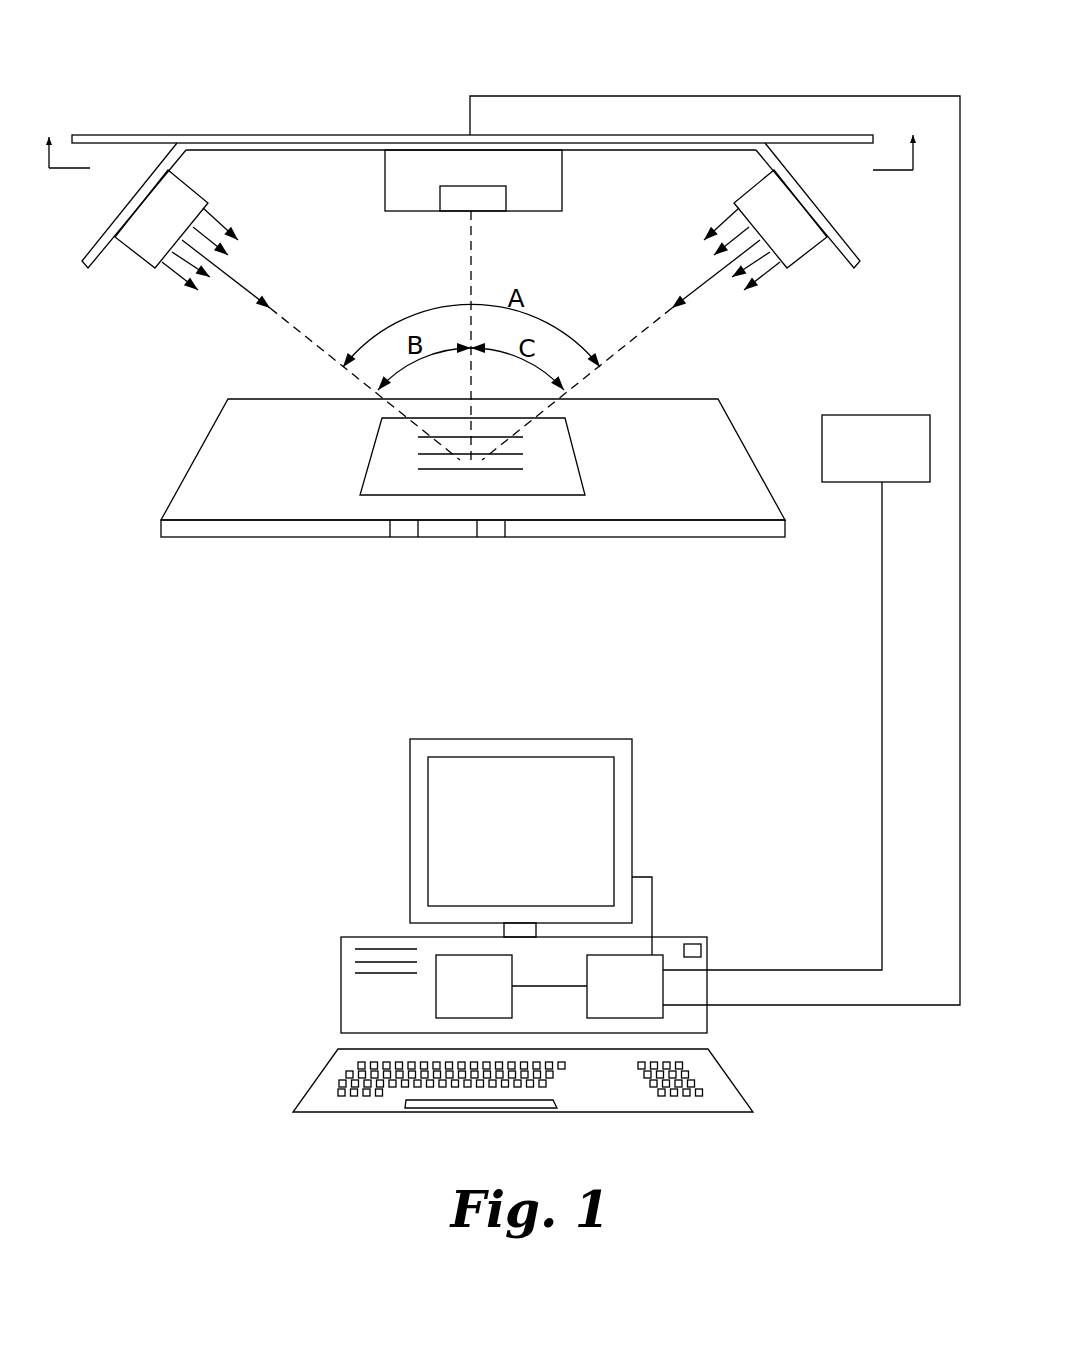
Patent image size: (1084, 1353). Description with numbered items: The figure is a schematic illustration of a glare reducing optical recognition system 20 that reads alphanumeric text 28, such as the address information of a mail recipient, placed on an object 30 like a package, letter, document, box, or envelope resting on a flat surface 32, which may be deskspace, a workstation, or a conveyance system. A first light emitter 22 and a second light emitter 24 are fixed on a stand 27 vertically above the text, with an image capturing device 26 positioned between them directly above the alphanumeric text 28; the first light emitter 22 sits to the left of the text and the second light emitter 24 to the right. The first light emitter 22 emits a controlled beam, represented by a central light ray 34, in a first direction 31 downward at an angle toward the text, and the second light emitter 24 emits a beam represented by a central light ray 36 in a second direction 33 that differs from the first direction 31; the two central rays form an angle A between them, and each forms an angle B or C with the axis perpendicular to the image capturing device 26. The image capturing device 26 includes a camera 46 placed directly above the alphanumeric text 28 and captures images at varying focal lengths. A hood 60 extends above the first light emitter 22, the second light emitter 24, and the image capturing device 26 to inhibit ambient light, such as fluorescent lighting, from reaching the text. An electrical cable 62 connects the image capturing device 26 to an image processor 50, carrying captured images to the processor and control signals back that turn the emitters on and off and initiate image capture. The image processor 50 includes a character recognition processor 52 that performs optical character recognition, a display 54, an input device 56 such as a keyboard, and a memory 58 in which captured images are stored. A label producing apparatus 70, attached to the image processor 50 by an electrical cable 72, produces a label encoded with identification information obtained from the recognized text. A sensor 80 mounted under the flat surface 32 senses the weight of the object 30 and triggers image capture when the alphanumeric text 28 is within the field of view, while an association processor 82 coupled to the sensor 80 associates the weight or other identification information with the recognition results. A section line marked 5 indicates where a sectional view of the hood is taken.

The section line 5- 5 is at (481, 170).
The glare reducing optical recognition system 20 is at (158, 440).
The first light emitter 22 is at (132, 253).
The second light emitter 24 is at (807, 260).
The image capturing device 26 is at (562, 180).
The stand 27 is at (243, 134).
The alphanumeric text 28 is at (508, 470).
The object 30 is at (385, 452).
The first direction 31 is at (215, 218).
The flat surface 32 is at (240, 500).
The second direction 33 is at (728, 218).
The central light ray 34 is at (227, 272).
The central light ray 36 is at (717, 272).
The camera 46 is at (482, 203).
The image processor 50 is at (290, 862).
The character recognition processor 52 is at (462, 1002).
The display 54 is at (410, 784).
The input device 56 is at (390, 1103).
The memory 58 is at (653, 965).
The hood 60 is at (282, 134).
The electrical cable 62 is at (607, 96).
The label producing apparatus 70 is at (848, 470).
The electrical cable 72 is at (882, 657).
The sensor 80 is at (488, 537).
The association processor 82 is at (407, 537).